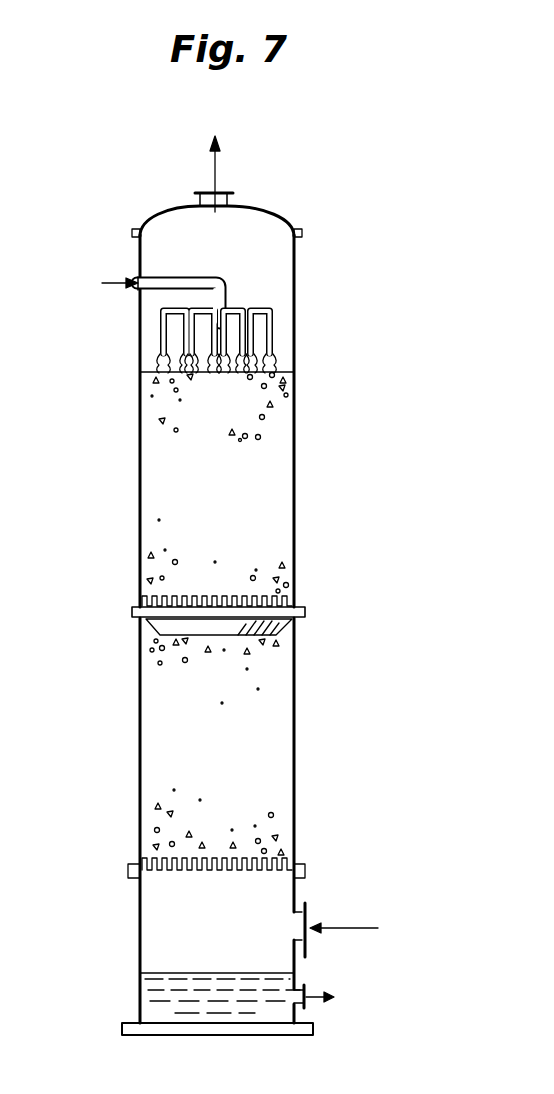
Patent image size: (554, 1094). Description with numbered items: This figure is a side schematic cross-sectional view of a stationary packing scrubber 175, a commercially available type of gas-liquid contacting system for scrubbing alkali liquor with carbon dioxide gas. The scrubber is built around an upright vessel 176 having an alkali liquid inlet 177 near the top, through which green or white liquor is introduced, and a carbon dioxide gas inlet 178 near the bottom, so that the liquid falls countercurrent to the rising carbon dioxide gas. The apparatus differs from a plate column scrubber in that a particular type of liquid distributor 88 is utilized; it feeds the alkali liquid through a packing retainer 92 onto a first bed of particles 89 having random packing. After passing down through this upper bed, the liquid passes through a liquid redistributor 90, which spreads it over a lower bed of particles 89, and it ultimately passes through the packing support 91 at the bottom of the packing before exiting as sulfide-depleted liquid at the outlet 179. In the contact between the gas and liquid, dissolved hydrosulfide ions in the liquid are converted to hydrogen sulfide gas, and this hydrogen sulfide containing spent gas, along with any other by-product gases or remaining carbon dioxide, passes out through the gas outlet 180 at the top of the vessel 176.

The stationary packing scrubber 175 is at (312, 479).
The upright vessel 176 is at (297, 266).
The alkali liquid inlet 177 is at (135, 292).
The liquid distributor 88 is at (277, 312).
The packing retainer 92 is at (278, 366).
The first bed of particles 89 is at (158, 486).
The liquid redistributor 90 is at (295, 607).
The packing support 91 is at (190, 881).
The carbon dioxide gas inlet 178 is at (300, 915).
The sulfide-depleted liquid outlet 179 is at (300, 1010).
The gas outlet 180 is at (228, 203).